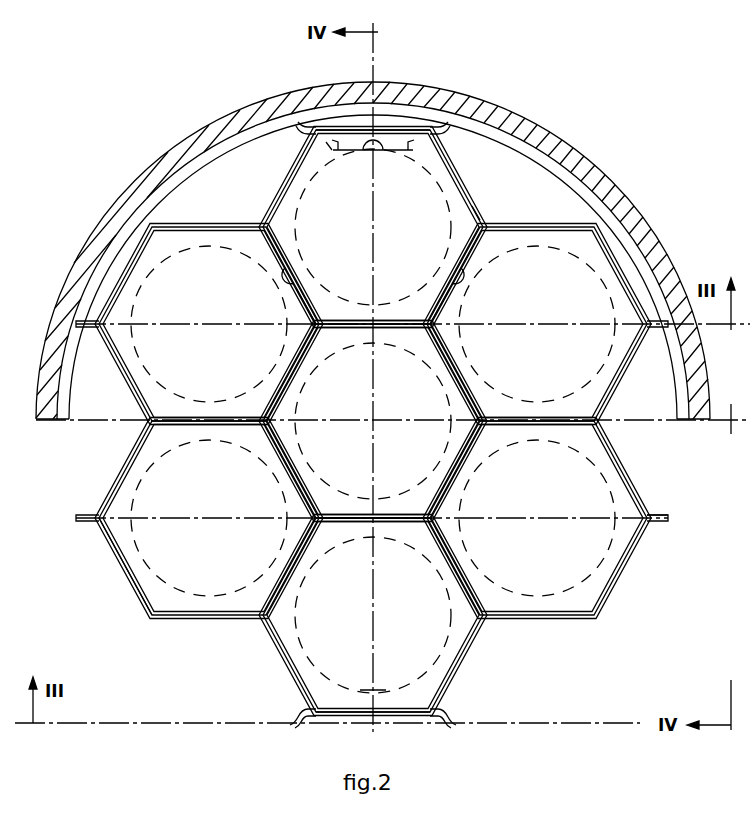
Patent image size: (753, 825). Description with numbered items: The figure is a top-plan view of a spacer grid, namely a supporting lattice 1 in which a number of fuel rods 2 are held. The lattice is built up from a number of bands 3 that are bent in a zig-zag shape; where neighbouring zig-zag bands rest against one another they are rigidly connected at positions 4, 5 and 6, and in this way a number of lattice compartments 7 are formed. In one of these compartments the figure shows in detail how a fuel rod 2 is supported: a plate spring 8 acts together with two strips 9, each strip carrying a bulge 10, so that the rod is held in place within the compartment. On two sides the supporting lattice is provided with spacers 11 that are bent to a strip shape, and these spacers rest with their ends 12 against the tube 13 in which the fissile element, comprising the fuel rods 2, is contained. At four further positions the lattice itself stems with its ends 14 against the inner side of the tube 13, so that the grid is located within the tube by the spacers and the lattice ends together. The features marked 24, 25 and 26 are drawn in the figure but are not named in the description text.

The supporting lattice 1 is at (136, 404).
The fuel rods 2 is at (148, 362).
The bands 3 is at (132, 462).
The position 4 is at (99, 526).
The position 5 is at (384, 516).
The position 6 is at (662, 514).
The lattice compartments 7 is at (341, 461).
The plate spring 8 is at (396, 148).
The strips 9 is at (308, 300).
The bulge 10 is at (296, 260).
The spacers 11 is at (316, 132).
The ends 12 is at (305, 122).
The tube 13 is at (60, 388).
The ends 14 is at (76, 334).
The hook 24 is at (328, 156).
The joint 25 is at (326, 316).
The hook 26 is at (470, 223).